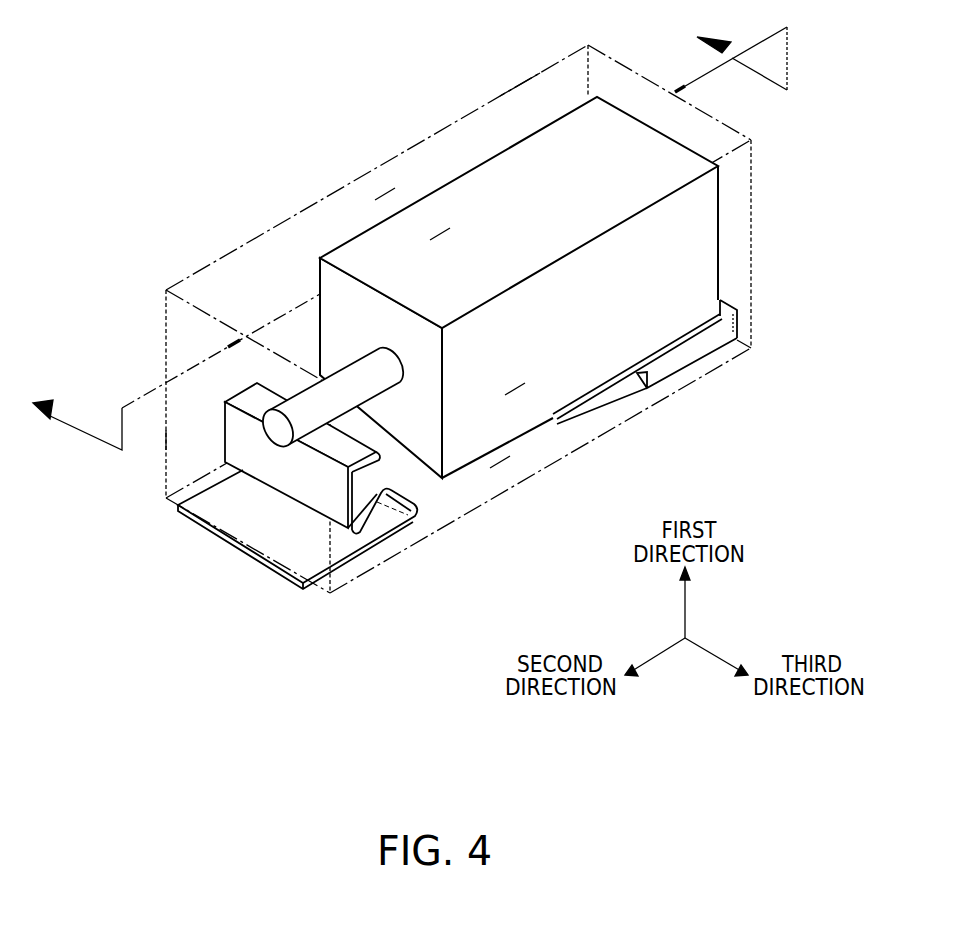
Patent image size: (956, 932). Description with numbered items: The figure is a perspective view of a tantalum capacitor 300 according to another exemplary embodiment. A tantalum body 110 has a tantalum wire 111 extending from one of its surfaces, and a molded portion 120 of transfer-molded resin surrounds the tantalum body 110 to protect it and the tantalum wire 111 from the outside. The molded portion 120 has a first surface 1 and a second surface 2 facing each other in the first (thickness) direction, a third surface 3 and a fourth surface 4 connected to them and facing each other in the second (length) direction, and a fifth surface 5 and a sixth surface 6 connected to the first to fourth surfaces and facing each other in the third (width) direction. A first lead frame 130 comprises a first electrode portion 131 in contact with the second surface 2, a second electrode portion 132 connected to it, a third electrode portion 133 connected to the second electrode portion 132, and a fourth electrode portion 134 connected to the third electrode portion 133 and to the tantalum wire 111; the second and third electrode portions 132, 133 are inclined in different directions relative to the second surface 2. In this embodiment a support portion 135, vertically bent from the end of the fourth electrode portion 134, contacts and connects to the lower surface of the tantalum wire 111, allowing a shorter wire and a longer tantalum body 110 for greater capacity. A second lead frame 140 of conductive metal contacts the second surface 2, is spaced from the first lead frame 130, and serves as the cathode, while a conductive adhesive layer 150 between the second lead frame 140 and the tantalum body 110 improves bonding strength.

The tantalum capacitor 300 is at (222, 81).
The first surface 1 is at (443, 218).
The second surface 2 is at (500, 463).
The third surface 3 is at (207, 417).
The fourth surface 4 is at (735, 223).
The fifth surface 5 is at (380, 192).
The sixth surface 6 is at (515, 392).
The tantalum body 110 is at (510, 173).
The tantalum wire 111 is at (300, 400).
The molded portion 120 is at (540, 73).
The first lead frame 130 is at (297, 586).
The first electrode portion 131 is at (280, 517).
The second electrode portion 132 is at (421, 490).
The third electrode portion 133 is at (370, 520).
The fourth electrode portion 134 is at (316, 488).
The support portion 135 is at (236, 480).
The second lead frame 140 is at (677, 358).
The conductive adhesive layer 150 is at (703, 333).